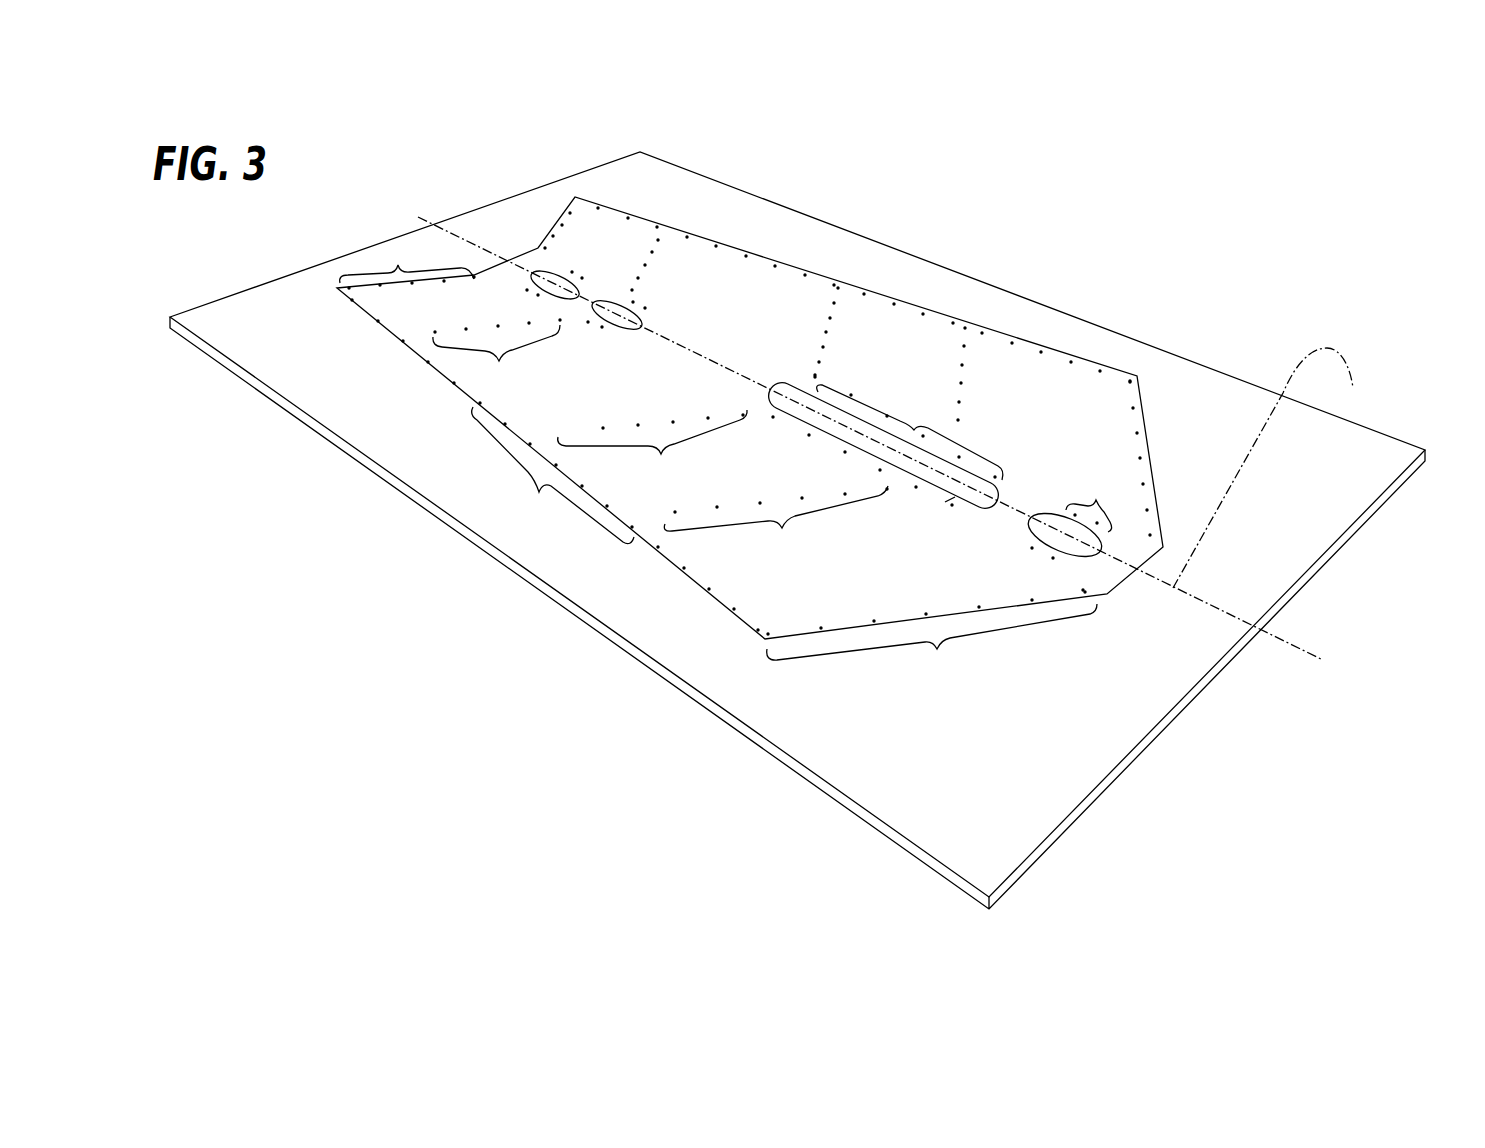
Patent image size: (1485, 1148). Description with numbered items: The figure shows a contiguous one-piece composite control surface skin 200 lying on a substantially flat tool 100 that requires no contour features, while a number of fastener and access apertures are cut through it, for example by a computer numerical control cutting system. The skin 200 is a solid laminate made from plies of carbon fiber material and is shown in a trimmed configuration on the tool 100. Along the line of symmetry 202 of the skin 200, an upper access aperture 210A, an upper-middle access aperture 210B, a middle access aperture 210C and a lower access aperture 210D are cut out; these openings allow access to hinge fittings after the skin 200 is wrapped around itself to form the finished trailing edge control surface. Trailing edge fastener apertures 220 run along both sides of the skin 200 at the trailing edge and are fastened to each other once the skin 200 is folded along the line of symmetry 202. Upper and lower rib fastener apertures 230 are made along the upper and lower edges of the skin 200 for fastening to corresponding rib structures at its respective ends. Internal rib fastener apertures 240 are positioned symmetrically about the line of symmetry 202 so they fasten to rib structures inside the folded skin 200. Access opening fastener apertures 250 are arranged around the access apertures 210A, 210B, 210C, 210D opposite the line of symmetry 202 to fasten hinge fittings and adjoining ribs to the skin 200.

The flat tool 100 is at (797, 530).
The control surface skin 200 is at (1110, 385).
The line of symmetry 202 is at (1279, 468).
The upper access aperture 210A is at (543, 273).
The upper-middle access aperture 210B is at (620, 303).
The middle access aperture 210C is at (950, 498).
The lower access aperture 210D is at (1085, 558).
The trailing edge fastener apertures 220 is at (539, 492).
The upper and lower rib fastener apertures 230 is at (399, 263).
The internal rib fastener apertures 240 is at (499, 361).
The access opening fastener apertures 250 is at (915, 428).